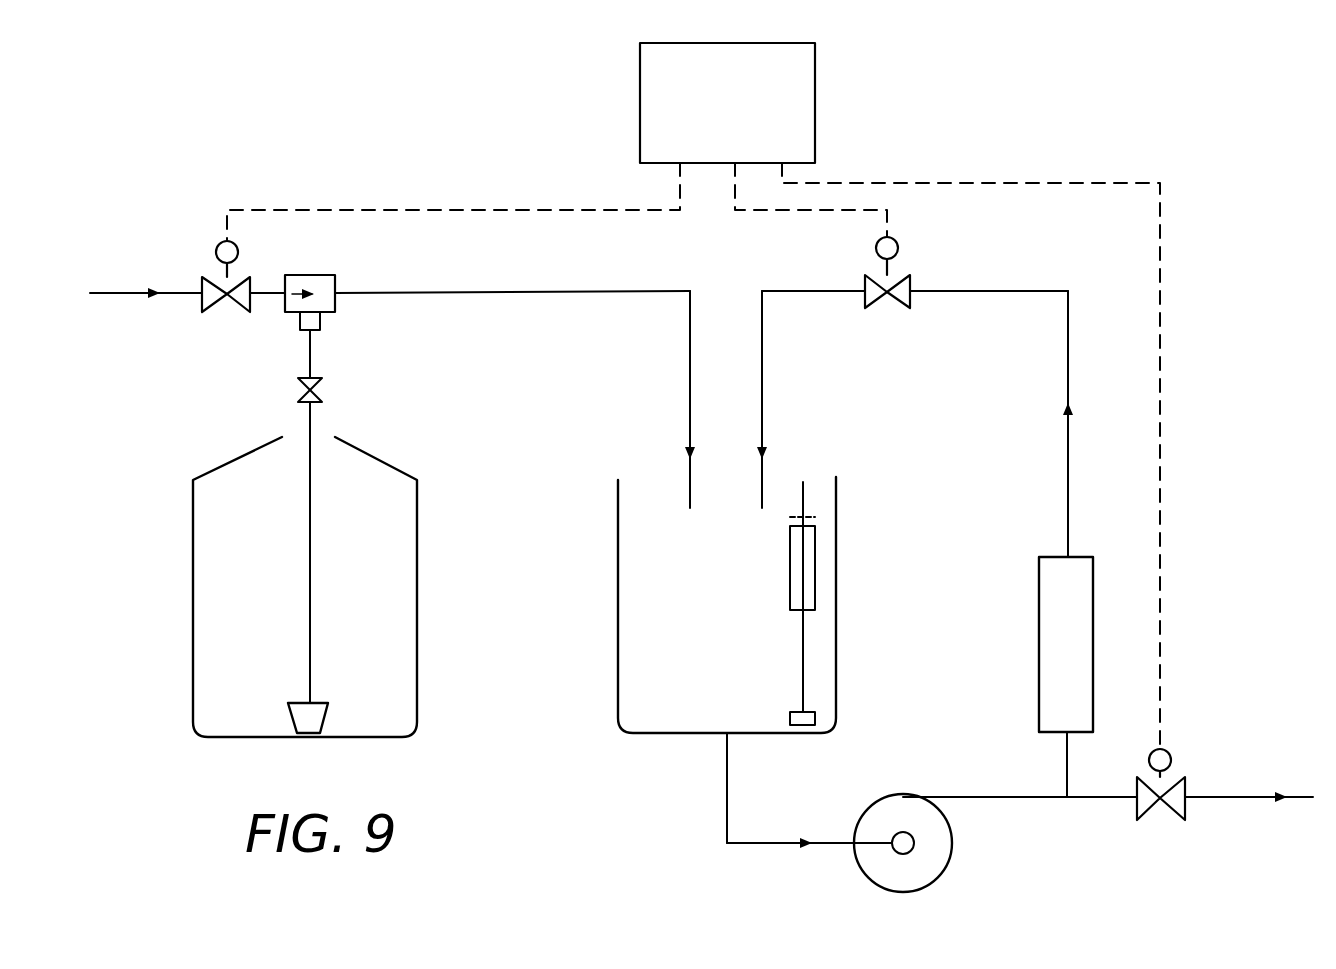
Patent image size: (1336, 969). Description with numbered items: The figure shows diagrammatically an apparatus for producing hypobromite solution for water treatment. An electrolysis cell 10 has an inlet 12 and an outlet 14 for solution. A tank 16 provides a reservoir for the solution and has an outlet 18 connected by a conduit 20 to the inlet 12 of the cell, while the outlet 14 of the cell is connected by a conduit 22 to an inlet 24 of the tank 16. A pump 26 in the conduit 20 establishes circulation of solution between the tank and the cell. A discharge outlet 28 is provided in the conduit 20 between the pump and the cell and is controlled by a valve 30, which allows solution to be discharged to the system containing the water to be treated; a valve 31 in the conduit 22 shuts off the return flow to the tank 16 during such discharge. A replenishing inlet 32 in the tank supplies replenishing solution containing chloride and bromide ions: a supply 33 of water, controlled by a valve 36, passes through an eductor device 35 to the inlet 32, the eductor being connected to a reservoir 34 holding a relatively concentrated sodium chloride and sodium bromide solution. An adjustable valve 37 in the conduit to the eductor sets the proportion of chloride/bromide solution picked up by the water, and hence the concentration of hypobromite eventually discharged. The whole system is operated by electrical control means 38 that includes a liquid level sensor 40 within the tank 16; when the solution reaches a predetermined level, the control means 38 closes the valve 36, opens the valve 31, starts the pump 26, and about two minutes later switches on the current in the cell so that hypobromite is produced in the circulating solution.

The electrolysis cell 10 is at (1038, 658).
The inlet 12 is at (1064, 768).
The outlet 14 is at (1063, 495).
The tank 16 is at (617, 605).
The outlet 18 is at (722, 740).
The conduit 20 is at (748, 845).
The conduit 22 is at (1012, 289).
The inlet 24 is at (764, 487).
The pump 26 is at (945, 868).
The discharge outlet 28 is at (1108, 799).
The valve 30 is at (1166, 814).
The valve 31 is at (886, 296).
The replenishing inlet 32 is at (686, 483).
The supply 33 is at (115, 290).
The reservoir 34 is at (417, 540).
The eductor device 35 is at (318, 275).
The valve 36 is at (222, 312).
The adjustable valve 37 is at (320, 390).
The control means 38 is at (655, 112).
The liquid level sensor 40 is at (817, 560).